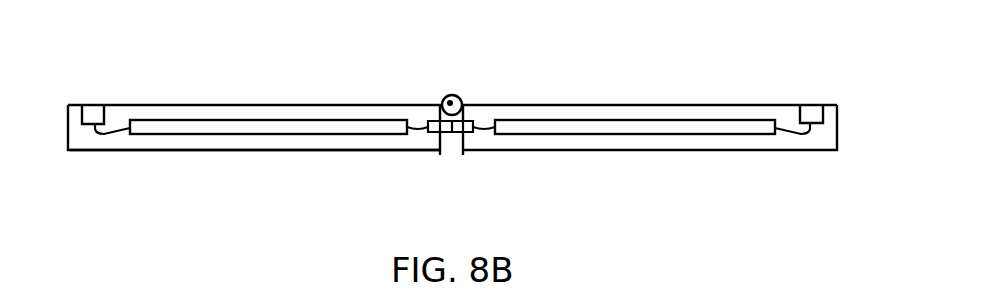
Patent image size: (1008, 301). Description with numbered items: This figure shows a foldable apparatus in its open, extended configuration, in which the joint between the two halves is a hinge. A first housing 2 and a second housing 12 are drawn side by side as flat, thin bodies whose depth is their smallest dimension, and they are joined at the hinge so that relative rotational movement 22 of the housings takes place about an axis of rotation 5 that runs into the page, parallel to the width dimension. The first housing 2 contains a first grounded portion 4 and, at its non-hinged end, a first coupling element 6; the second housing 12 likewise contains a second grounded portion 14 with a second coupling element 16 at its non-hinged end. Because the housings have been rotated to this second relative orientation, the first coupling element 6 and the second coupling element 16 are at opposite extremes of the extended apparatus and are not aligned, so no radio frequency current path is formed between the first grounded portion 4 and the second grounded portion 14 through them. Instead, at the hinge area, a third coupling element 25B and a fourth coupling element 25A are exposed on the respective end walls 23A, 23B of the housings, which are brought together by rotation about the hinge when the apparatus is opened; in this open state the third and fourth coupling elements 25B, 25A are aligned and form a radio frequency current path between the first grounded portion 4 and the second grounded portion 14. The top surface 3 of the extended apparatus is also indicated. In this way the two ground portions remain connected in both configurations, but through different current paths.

The first housing 2 is at (822, 151).
The top surface of housing 3 is at (626, 105).
The first grounded portion 4 is at (624, 136).
The axis of rotation 5 is at (447, 95).
The first coupling element 6 is at (812, 105).
The second housing 12 is at (322, 151).
The second grounded portion 14 is at (298, 120).
The second coupling element 16 is at (92, 105).
The relative rotational movement 22 is at (763, 83).
The end wall 23A is at (440, 155).
The end wall 23B is at (463, 155).
The fourth coupling element 25A is at (440, 105).
The third coupling element 25B is at (464, 105).